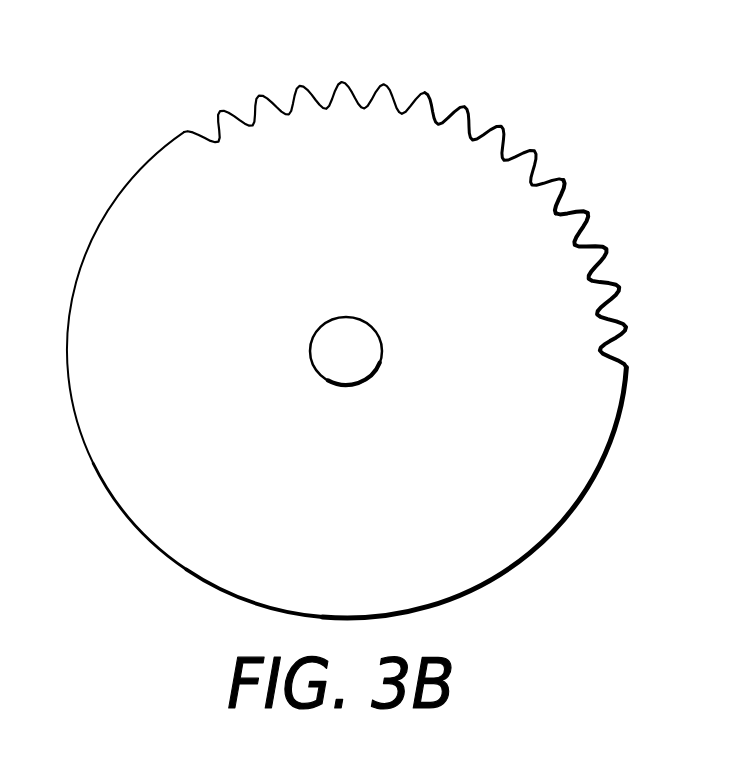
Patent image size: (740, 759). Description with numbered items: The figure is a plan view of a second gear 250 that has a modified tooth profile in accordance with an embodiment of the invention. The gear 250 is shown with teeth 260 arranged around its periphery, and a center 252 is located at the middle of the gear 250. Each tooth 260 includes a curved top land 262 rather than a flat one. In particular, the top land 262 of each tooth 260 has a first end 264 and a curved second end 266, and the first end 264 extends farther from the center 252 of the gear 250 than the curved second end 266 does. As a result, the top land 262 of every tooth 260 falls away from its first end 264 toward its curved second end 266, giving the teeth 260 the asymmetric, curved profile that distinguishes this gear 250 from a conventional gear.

The second gear 250 is at (130, 181).
The center 252 is at (382, 346).
The teeth 260 is at (439, 191).
The curved top land 262 is at (625, 201).
The first end 264 is at (600, 204).
The curved second end 266 is at (600, 220).